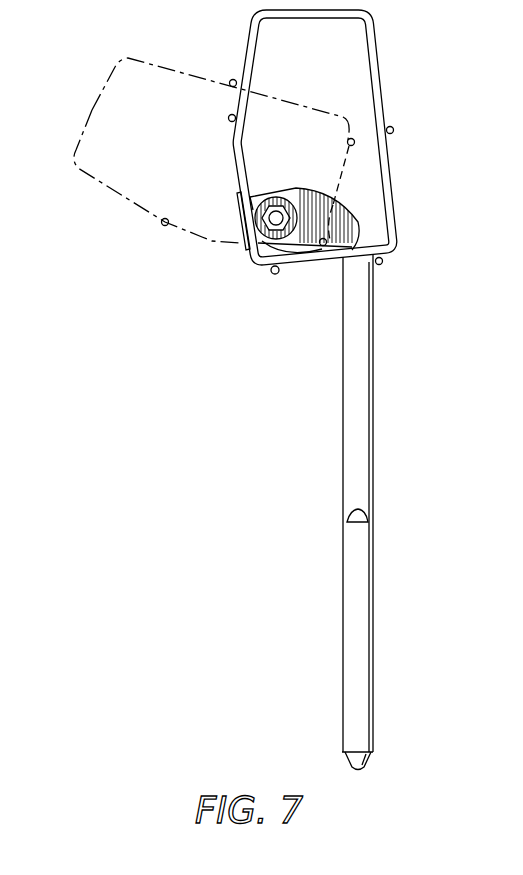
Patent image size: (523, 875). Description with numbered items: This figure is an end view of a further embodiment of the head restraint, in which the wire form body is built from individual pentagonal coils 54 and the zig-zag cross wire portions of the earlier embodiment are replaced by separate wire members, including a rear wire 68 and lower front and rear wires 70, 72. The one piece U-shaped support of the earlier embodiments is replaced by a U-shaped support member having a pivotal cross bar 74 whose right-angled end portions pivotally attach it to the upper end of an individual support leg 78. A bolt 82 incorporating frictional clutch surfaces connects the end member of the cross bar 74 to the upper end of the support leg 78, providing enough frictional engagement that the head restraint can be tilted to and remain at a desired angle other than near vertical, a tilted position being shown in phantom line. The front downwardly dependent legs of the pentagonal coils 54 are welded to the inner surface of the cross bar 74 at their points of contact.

The pentagonal coils 54 is at (251, 29).
The rear wire 68 is at (394, 130).
The lower front wire 70 is at (273, 277).
The lower rear wire 72 is at (383, 261).
The pivotal cross bar 74 is at (240, 225).
The support leg 78 is at (375, 311).
The bolt 82 is at (277, 207).